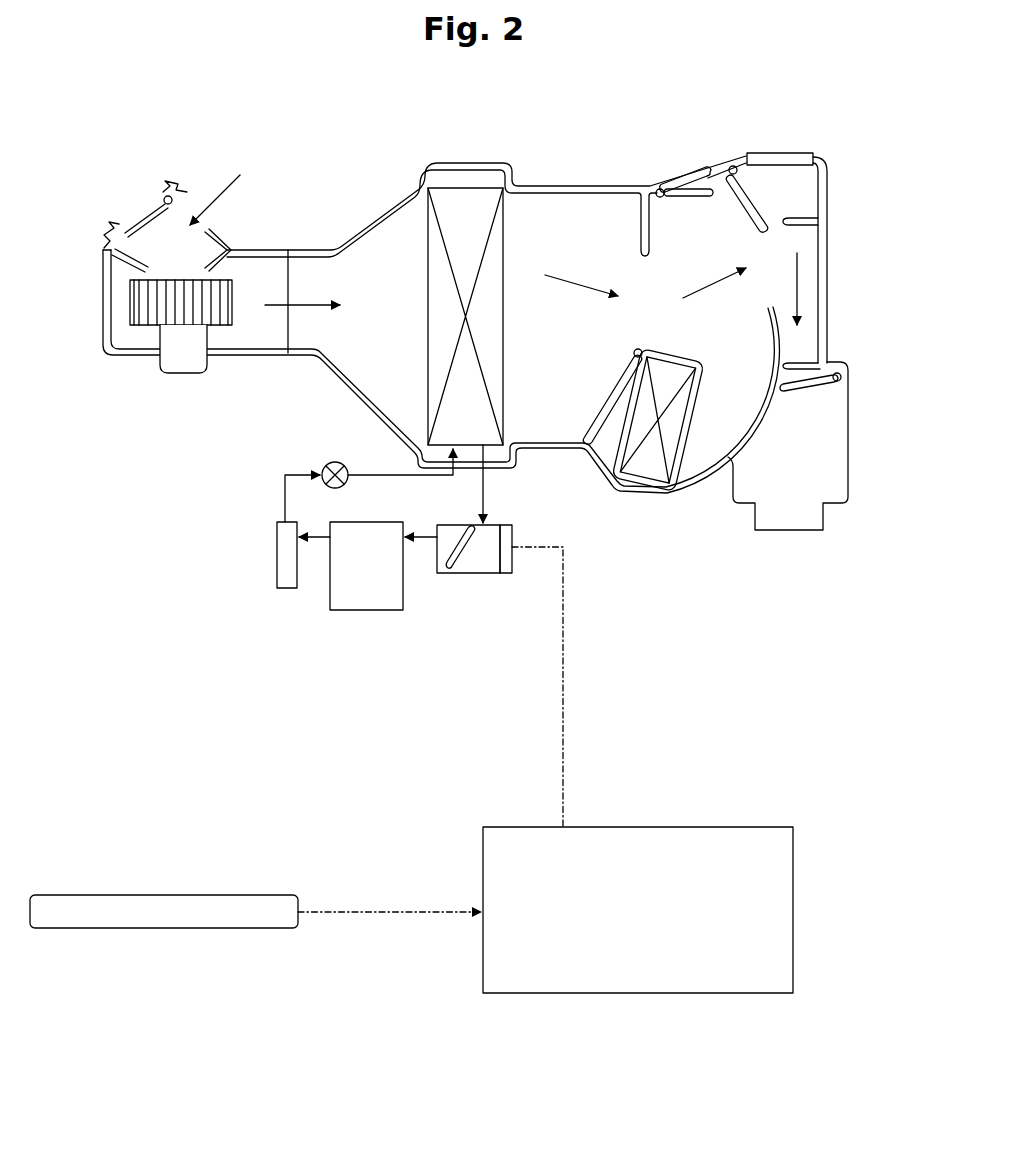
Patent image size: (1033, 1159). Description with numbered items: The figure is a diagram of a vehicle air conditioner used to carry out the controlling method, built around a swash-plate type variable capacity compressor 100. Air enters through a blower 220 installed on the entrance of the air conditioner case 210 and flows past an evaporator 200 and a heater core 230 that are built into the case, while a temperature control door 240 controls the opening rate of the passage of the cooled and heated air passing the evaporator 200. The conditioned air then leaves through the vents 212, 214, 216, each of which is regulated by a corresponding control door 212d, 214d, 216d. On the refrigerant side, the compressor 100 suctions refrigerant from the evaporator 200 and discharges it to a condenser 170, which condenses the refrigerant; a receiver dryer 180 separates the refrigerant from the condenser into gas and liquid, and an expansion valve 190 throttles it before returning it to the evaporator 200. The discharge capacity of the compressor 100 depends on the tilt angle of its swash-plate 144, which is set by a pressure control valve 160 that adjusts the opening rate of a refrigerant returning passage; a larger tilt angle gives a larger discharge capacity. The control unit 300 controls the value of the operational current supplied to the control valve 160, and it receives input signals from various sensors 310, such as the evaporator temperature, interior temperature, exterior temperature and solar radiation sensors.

The swash-plate type variable capacity compressor 100 is at (472, 570).
The swash-plate 144 is at (450, 570).
The pressure control valve 160 is at (503, 563).
The condenser 170 is at (348, 605).
The receiver dryer 180 is at (288, 580).
The expansion valve 190 is at (327, 462).
The evaporator 200 is at (477, 200).
The air conditioner case 210 is at (572, 187).
The vent 212 is at (683, 172).
The control door 212d is at (688, 197).
The vent 214 is at (780, 162).
The control door 214d is at (757, 208).
The vent 216 is at (798, 363).
The control door 216d is at (800, 388).
The blower 220 is at (123, 357).
The heater core 230 is at (663, 490).
The temperature control door 240 is at (613, 393).
The control unit 300 is at (780, 915).
The sensors 310 is at (290, 902).